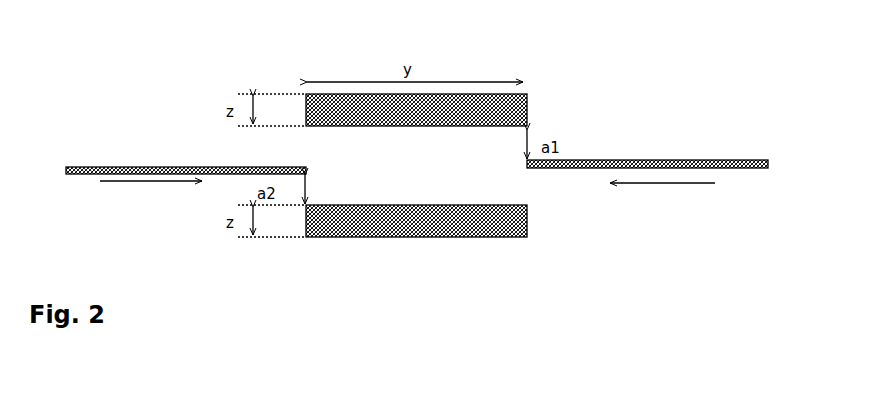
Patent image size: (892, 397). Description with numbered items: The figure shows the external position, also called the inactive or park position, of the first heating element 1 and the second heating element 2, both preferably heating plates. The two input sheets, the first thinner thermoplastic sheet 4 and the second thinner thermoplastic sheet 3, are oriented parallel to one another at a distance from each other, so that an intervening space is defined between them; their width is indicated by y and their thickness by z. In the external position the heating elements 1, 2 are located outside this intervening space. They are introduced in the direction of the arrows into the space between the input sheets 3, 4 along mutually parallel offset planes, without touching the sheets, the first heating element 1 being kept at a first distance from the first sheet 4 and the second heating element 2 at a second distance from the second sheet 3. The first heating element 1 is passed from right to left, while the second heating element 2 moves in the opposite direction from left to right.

The first heating element 1 is at (722, 162).
The second heating element 2 is at (97, 167).
The second thinner thermoplastic sheet 3 is at (477, 238).
The first thinner thermoplastic sheet 4 is at (530, 115).